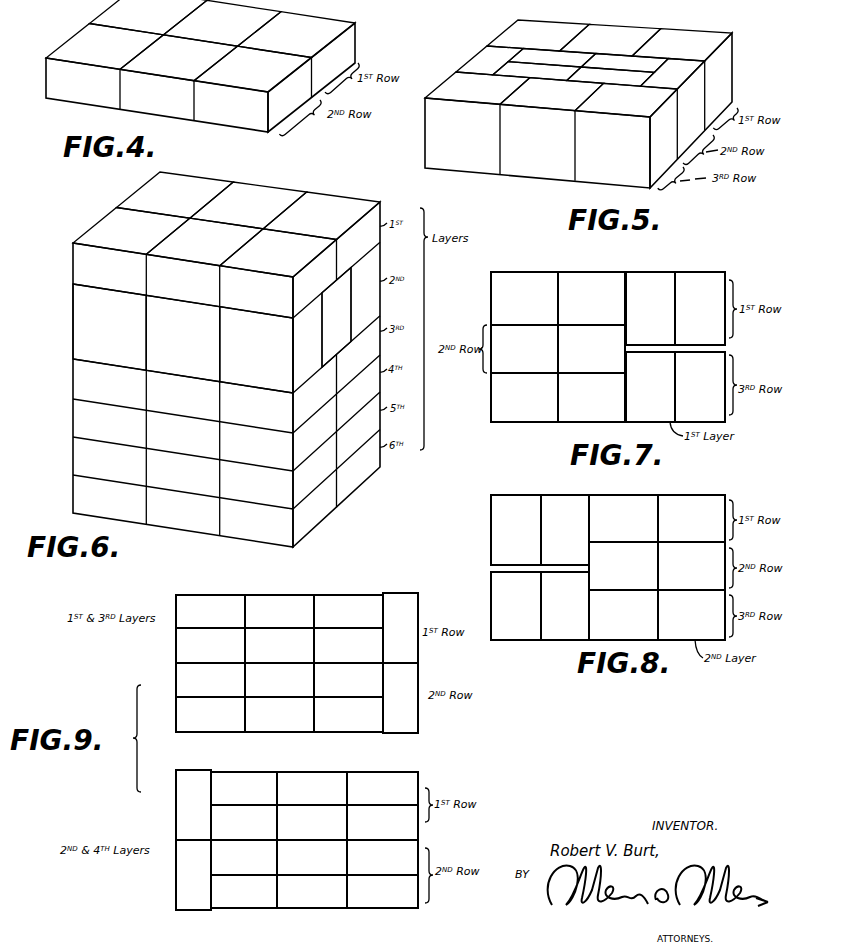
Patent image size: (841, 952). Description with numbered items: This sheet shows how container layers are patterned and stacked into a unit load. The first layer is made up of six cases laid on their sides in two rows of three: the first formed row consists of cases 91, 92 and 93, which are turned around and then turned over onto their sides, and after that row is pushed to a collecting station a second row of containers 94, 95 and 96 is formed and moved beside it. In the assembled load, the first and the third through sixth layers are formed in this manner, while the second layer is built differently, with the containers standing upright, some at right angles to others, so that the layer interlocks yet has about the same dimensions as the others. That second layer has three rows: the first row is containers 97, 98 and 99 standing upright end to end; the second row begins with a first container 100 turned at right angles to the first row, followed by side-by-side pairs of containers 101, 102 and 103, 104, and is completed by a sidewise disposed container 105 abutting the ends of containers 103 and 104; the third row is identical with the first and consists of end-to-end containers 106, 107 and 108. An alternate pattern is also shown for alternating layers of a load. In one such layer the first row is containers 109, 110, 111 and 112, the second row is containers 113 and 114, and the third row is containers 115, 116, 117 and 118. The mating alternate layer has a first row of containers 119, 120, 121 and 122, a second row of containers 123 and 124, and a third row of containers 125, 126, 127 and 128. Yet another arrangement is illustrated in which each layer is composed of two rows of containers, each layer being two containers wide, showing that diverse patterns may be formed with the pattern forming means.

In FIG. 4, the case 91 is at (149, 17).
In FIG. 6, the case 91 is at (175, 195).
In FIG. 4, the case 92 is at (223, 23).
In FIG. 6, the case 92 is at (248, 205).
In FIG. 4, the case 93 is at (297, 35).
In FIG. 6, the case 93 is at (321, 216).
In FIG. 4, the container 94 is at (105, 47).
In FIG. 6, the container 94 is at (131, 231).
In FIG. 4, the container 95 is at (179, 58).
In FIG. 6, the container 95 is at (204, 242).
In FIG. 4, the container 96 is at (253, 69).
In FIG. 6, the container 96 is at (278, 253).
In FIG. 5, the container 97 is at (538, 35).
In FIG. 5, the container 98 is at (610, 40).
In FIG. 5, the container 99 is at (682, 45).
In FIG. 5, the first container 100 is at (489, 60).
In FIG. 5, the container 101 is at (552, 58).
In FIG. 5, the container 102 is at (537, 71).
In FIG. 5, the container 103 is at (624, 63).
In FIG. 5, the container 104 is at (611, 76).
In FIG. 5, the sidewise disposed container 105 is at (672, 74).
In FIG. 6, the sidewise disposed container 105 is at (334, 318).
In FIG. 5, the container 106 is at (477, 88).
In FIG. 6, the container 106 is at (109, 327).
In FIG. 5, the container 107 is at (552, 94).
In FIG. 6, the container 107 is at (182, 338).
In FIG. 5, the container 108 is at (626, 100).
In FIG. 6, the container 108 is at (256, 350).
In FIG. 7, the container 109 is at (524, 298).
In FIG. 7, the container 110 is at (591, 298).
In FIG. 7, the container 111 is at (650, 308).
In FIG. 7, the container 112 is at (700, 308).
In FIG. 7, the container 113 is at (524, 349).
In FIG. 7, the container 114 is at (591, 349).
In FIG. 7, the container 115 is at (524, 397).
In FIG. 7, the container 116 is at (591, 397).
In FIG. 7, the container 117 is at (650, 387).
In FIG. 7, the container 118 is at (700, 387).
In FIG. 8, the container 119 is at (516, 530).
In FIG. 8, the container 120 is at (565, 530).
In FIG. 8, the container 121 is at (623, 518).
In FIG. 8, the container 122 is at (691, 518).
In FIG. 8, the container 123 is at (623, 566).
In FIG. 8, the container 124 is at (691, 566).
In FIG. 8, the container 125 is at (516, 606).
In FIG. 8, the container 126 is at (565, 606).
In FIG. 8, the container 127 is at (623, 615).
In FIG. 8, the container 128 is at (691, 615).